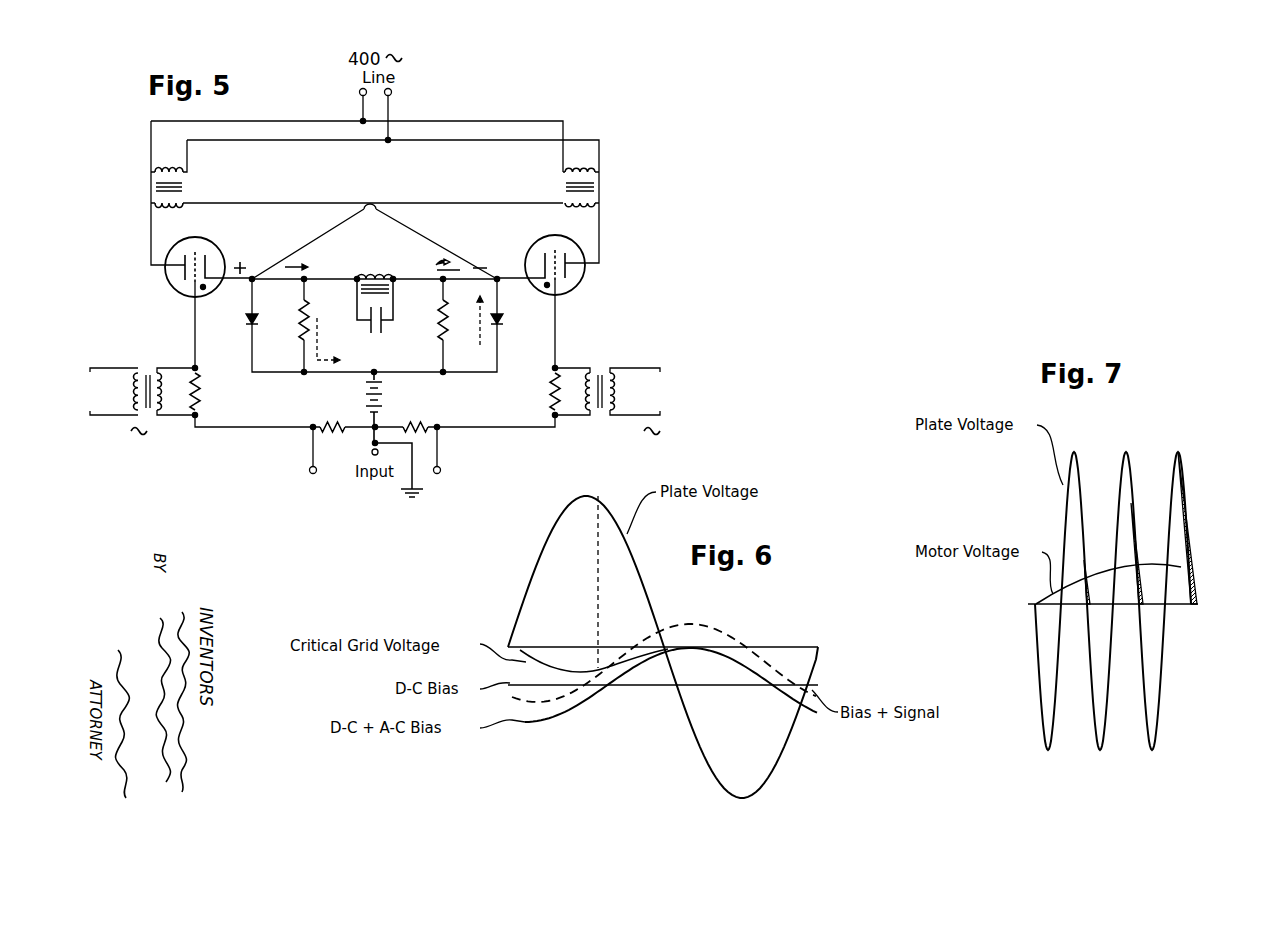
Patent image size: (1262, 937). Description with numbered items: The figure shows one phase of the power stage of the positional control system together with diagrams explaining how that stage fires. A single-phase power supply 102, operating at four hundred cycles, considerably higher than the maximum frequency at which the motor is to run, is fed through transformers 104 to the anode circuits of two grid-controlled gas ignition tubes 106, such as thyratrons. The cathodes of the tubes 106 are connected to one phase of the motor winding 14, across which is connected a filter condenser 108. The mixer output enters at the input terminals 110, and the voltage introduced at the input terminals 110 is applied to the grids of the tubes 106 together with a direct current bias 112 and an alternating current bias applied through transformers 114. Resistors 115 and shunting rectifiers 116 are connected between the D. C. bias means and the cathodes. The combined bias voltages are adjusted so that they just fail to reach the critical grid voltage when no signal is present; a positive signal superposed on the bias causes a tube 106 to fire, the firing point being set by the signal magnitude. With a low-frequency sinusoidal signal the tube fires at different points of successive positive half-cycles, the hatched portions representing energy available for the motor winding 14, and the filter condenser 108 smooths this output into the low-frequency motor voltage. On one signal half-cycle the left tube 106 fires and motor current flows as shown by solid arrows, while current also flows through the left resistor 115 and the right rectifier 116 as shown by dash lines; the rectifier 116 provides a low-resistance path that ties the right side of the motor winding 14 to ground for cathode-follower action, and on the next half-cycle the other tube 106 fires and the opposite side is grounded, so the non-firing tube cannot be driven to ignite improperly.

The power supply 102 is at (383, 107).
The transformers 104 is at (188, 186).
The grid-controlled gas ignition tubes 106 is at (172, 283).
The motor winding 14 is at (398, 283).
The filter condenser 108 is at (384, 320).
The direct current bias 112 is at (391, 398).
The transformers 114 is at (163, 411).
The resistors 115 is at (307, 311).
The shunting rectifiers 116 is at (256, 325).
The input terminals 110 is at (349, 457).